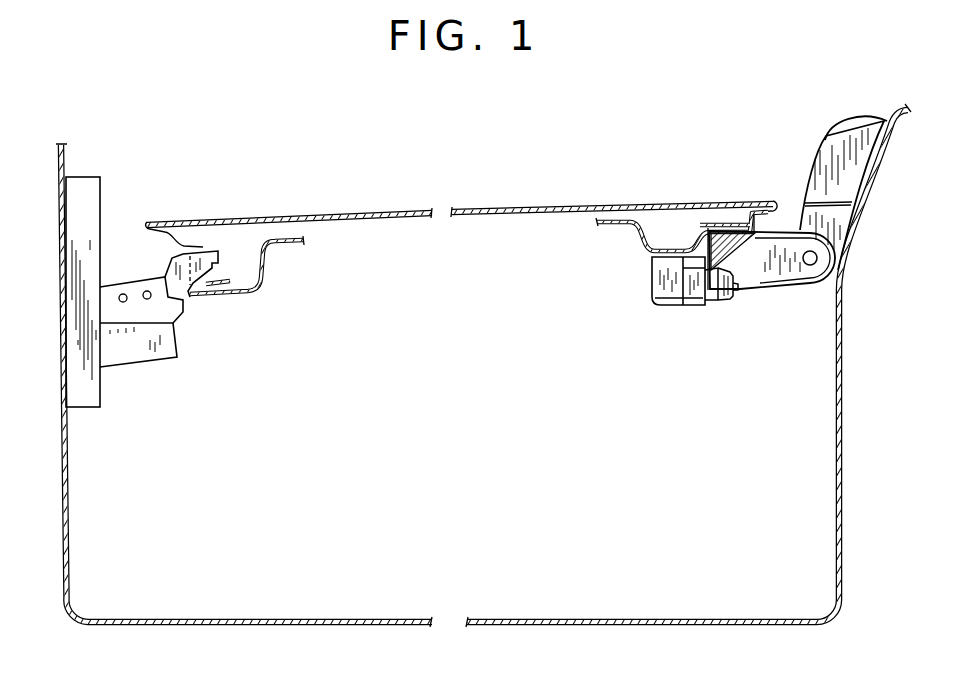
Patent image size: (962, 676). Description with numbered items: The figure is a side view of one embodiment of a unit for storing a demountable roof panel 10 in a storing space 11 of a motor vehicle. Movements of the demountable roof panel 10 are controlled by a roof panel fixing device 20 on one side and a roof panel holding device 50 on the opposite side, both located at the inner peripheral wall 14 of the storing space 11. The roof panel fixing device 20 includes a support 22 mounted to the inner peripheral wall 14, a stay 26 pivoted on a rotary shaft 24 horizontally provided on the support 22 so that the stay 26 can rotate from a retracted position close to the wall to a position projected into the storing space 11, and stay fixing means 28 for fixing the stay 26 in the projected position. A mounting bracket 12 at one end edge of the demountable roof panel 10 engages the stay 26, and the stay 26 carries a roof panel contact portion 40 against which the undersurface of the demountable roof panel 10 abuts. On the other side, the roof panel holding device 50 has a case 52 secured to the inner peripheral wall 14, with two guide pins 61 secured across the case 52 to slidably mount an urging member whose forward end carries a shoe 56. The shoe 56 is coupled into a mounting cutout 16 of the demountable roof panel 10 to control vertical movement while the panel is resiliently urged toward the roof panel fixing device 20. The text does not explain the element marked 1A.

The demountable roof panel 10 is at (343, 208).
The storing space 11 is at (483, 448).
The mounting bracket 12 is at (670, 300).
The inner peripheral wall 14 is at (70, 495).
The mounting cutout 16 is at (212, 288).
The piston rod 1A is at (737, 290).
The roof panel fixing device 20 is at (802, 189).
The support 22 is at (843, 192).
The rotary shaft 24 is at (818, 258).
The stay 26 is at (777, 287).
The stay fixing means 28 is at (827, 124).
The roof panel contact portion 40 is at (715, 223).
The roof panel holding device 50 is at (171, 323).
The case 52 is at (165, 330).
The shoe 56 is at (215, 252).
The guide pins 61 is at (147, 290).